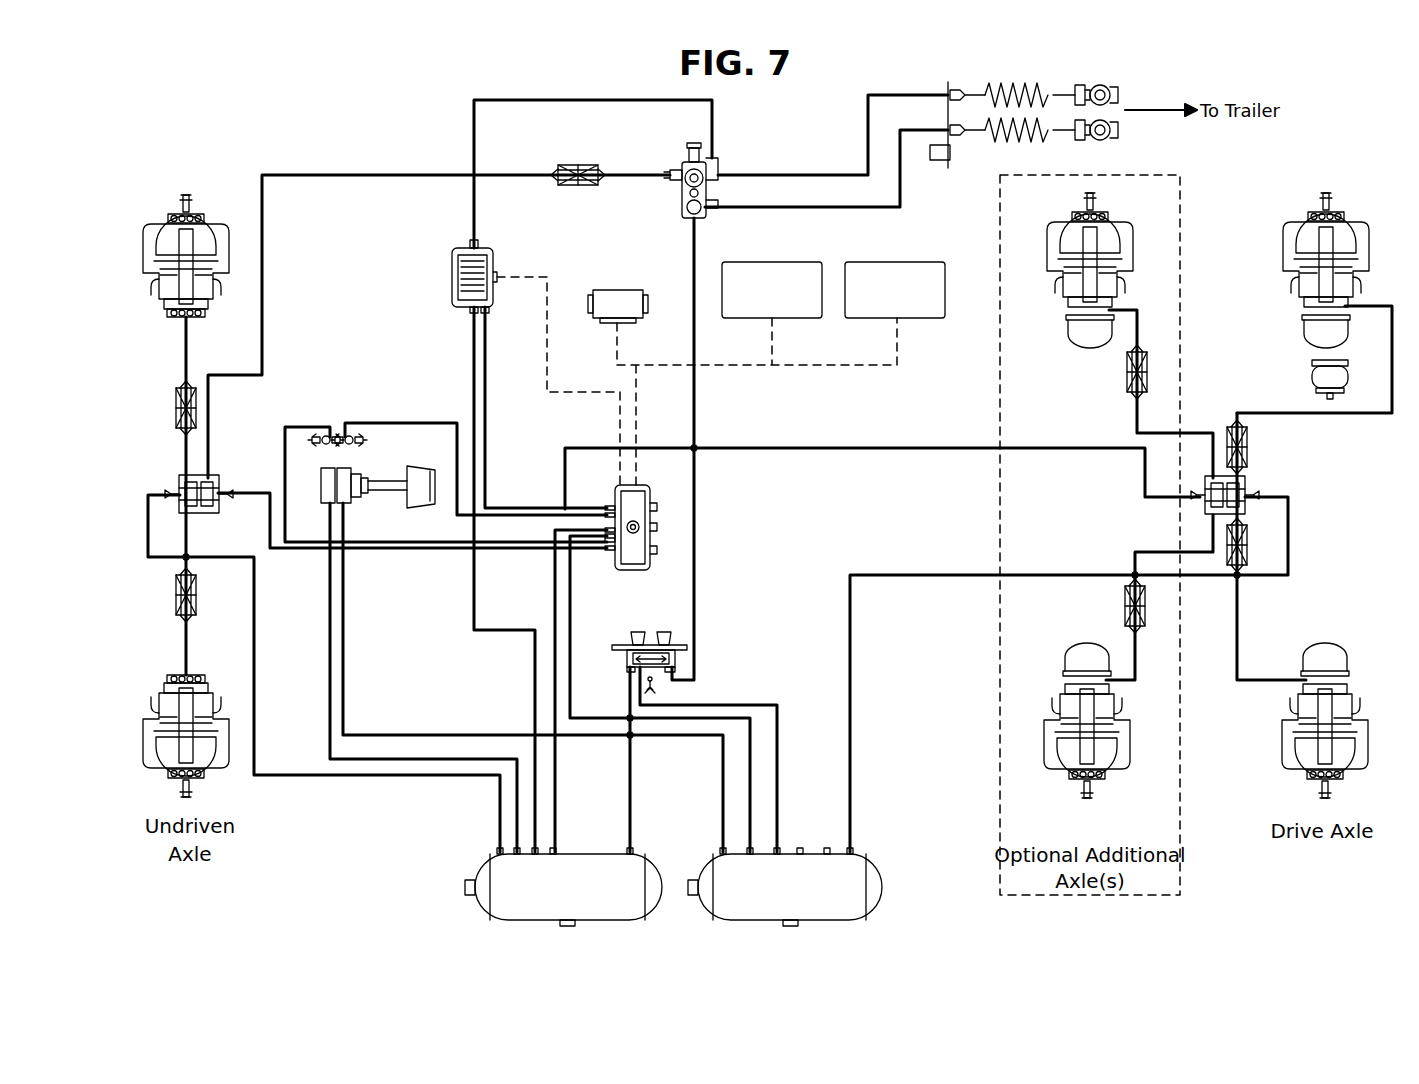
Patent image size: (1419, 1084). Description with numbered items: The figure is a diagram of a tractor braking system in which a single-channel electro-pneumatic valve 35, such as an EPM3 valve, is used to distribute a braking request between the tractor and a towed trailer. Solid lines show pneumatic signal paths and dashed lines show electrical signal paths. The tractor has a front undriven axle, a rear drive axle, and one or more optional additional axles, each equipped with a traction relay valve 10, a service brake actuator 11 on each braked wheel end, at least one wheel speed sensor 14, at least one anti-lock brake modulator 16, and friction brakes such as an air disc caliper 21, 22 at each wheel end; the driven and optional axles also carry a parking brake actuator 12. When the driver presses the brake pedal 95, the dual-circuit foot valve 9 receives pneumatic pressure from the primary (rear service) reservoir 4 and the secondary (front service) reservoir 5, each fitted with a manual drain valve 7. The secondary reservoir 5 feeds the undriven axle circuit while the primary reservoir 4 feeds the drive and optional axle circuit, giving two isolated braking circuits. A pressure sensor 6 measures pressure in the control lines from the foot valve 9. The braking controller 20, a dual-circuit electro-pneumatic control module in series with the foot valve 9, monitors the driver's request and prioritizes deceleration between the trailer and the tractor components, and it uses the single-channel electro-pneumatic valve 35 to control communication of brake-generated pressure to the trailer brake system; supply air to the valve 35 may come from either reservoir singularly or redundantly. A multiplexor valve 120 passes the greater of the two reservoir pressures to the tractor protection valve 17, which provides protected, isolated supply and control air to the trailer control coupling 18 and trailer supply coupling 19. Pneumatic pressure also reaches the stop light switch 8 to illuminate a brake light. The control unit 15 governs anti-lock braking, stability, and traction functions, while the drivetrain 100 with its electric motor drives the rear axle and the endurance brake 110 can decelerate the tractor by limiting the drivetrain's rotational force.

The primary reservoir 4 is at (870, 860).
The secondary reservoir 5 is at (490, 865).
The pressure sensor 6 is at (324, 435).
The manual drain valve 7 is at (564, 926).
The stop light switch 8 is at (687, 152).
The dual-circuit foot valve 9 is at (370, 518).
The traction relay valve 10 is at (211, 514).
The service brake actuator 11 is at (172, 313).
The parking brake actuator 12 is at (1068, 338).
The wheel speed sensor 14 is at (192, 200).
The control unit 15 is at (610, 290).
The anti-lock brake modulator 16 is at (172, 414).
The tractor protection valve 17 is at (680, 197).
The trailer control coupling 18 is at (1116, 88).
The trailer supply coupling 19 is at (1116, 134).
The braking controller 20 is at (652, 490).
The air disc caliper 21 is at (153, 268).
The air disc caliper 22 is at (151, 714).
The single-channel electro-pneumatic valve 35 is at (452, 268).
The brake pedal 95 is at (418, 466).
The drivetrain controller 100 is at (795, 262).
The endurance brake controller 110 is at (901, 262).
The multiplexor valve 120 is at (620, 644).